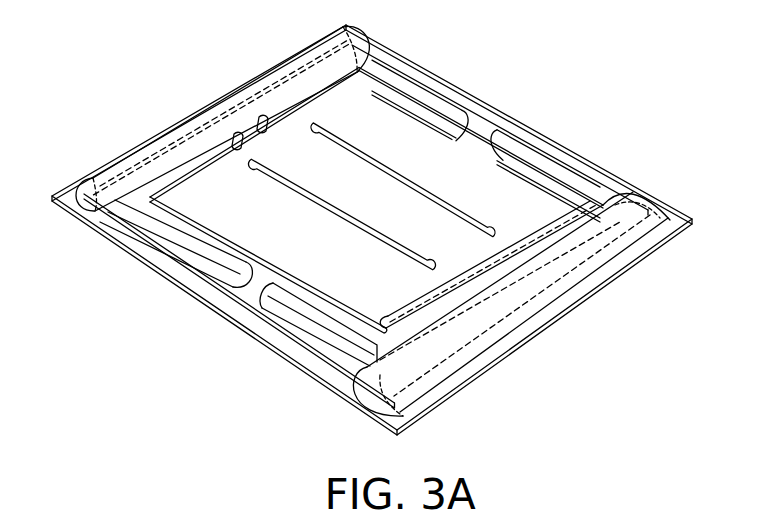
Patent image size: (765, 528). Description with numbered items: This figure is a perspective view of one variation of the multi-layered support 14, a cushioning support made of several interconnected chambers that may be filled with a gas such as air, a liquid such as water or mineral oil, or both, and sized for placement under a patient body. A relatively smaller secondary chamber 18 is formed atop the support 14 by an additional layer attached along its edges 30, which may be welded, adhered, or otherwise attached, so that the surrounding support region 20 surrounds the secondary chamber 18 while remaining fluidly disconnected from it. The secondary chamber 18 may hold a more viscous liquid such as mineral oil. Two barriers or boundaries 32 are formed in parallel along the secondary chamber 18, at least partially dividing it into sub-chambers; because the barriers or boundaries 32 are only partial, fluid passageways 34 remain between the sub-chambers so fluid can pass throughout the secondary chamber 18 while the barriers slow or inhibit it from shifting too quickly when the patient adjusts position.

The multi-layered support 14 is at (209, 303).
The secondary chamber 18 is at (443, 199).
The surrounding support region 20 is at (213, 135).
The edges 30 is at (306, 92).
The barriers or boundaries 32 is at (348, 137).
The fluid passageways 34 is at (475, 276).